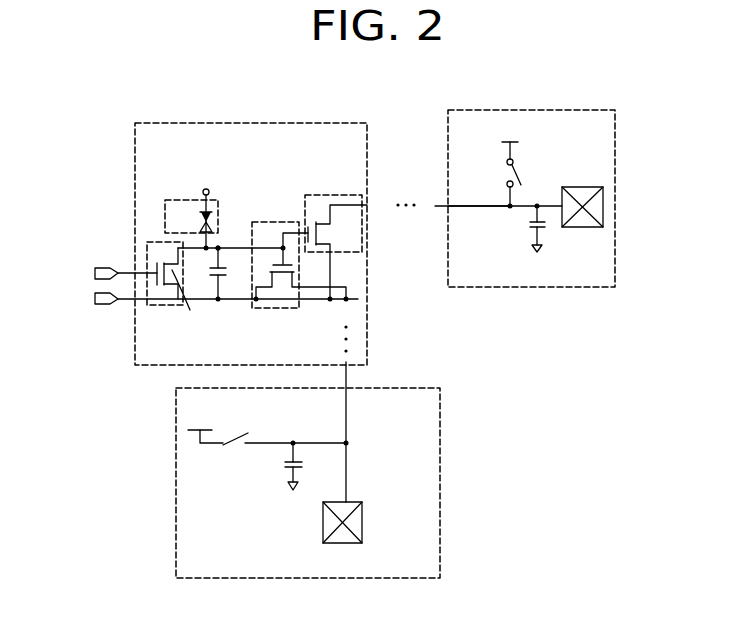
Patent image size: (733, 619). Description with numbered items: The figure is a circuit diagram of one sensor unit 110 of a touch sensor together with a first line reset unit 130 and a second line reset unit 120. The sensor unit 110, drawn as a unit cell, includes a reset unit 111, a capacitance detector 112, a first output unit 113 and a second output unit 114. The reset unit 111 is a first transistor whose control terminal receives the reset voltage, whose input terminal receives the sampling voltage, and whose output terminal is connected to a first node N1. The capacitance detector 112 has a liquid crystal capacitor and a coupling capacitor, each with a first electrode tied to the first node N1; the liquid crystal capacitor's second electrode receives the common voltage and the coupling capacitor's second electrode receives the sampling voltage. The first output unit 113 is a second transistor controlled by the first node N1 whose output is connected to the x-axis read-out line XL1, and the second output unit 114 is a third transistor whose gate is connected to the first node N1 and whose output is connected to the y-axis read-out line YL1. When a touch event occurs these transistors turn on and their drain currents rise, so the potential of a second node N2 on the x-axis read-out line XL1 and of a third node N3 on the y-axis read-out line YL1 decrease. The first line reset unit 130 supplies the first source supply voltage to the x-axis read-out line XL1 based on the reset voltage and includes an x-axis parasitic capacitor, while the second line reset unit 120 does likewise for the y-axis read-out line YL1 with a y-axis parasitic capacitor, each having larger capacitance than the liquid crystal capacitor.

The sensor unit 110 is at (237, 123).
The reset unit 111 is at (148, 243).
The capacitance detector 112 is at (165, 200).
The first output unit 113 is at (270, 222).
The second output unit 114 is at (330, 195).
The second line reset unit 120 is at (525, 167).
The first line reset unit 130 is at (345, 470).
The first node N1 is at (219, 247).
The second node N2 is at (350, 444).
The third node N3 is at (540, 206).
The x-axis read-out line XL1 is at (350, 418).
The y-axis read-out line YL1 is at (473, 206).